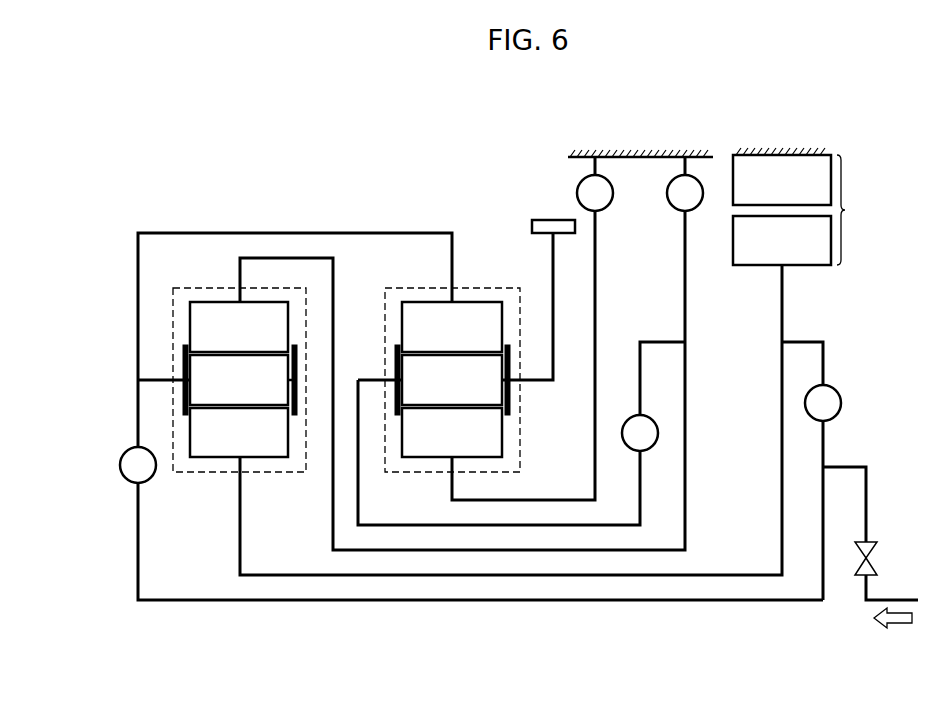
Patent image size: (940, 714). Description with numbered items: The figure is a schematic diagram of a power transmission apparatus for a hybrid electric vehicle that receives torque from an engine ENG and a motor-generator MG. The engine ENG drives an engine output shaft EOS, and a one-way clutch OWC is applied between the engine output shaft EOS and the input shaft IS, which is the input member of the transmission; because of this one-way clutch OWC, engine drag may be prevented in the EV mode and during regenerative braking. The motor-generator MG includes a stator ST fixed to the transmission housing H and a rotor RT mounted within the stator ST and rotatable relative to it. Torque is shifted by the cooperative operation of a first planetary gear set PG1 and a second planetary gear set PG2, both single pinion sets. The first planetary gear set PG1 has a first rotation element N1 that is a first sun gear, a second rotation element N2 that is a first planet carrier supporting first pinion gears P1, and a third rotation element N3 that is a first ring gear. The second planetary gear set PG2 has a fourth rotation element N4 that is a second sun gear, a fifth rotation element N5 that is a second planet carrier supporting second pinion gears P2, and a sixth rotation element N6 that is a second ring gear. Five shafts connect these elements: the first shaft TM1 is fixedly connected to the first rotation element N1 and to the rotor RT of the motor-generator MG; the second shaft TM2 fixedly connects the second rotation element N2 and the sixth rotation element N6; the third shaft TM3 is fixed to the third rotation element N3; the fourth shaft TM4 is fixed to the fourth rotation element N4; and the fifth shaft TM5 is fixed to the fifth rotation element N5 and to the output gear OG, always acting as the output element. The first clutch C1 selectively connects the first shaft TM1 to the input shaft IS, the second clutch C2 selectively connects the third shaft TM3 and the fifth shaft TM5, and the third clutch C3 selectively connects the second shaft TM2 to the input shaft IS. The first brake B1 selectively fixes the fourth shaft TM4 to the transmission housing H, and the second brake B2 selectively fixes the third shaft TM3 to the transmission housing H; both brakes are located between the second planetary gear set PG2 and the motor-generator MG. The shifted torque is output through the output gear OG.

The first shaft TM1 is at (603, 578).
The second shaft TM2 is at (293, 231).
The third shaft TM3 is at (538, 553).
The fourth shaft TM4 is at (598, 297).
The fifth shaft TM5 is at (553, 260).
The input shaft IS is at (663, 603).
The output gear OG is at (553, 218).
The first brake B1 is at (595, 193).
The second brake B2 is at (685, 193).
The first clutch C1 is at (811, 471).
The second clutch C2 is at (640, 433).
The third clutch C3 is at (138, 465).
The transmission housing H is at (640, 150).
The stator ST is at (782, 180).
The rotor RT is at (782, 240).
The motor-generator MG is at (805, 210).
The one-way clutch OWC is at (880, 524).
The engine output shaft EOS is at (901, 598).
The engine ENG is at (893, 632).
The first planetary gear set PG1 is at (234, 481).
The second planetary gear set PG2 is at (450, 481).
The first rotation element N1 is at (196, 476).
The second rotation element N2 is at (184, 366).
The third rotation element N3 is at (239, 327).
The fourth rotation element N4 is at (411, 476).
The fifth rotation element N5 is at (510, 396).
The sixth rotation element N6 is at (452, 327).
The first pinion gears P1 is at (240, 380).
The second pinion gears P2 is at (452, 380).